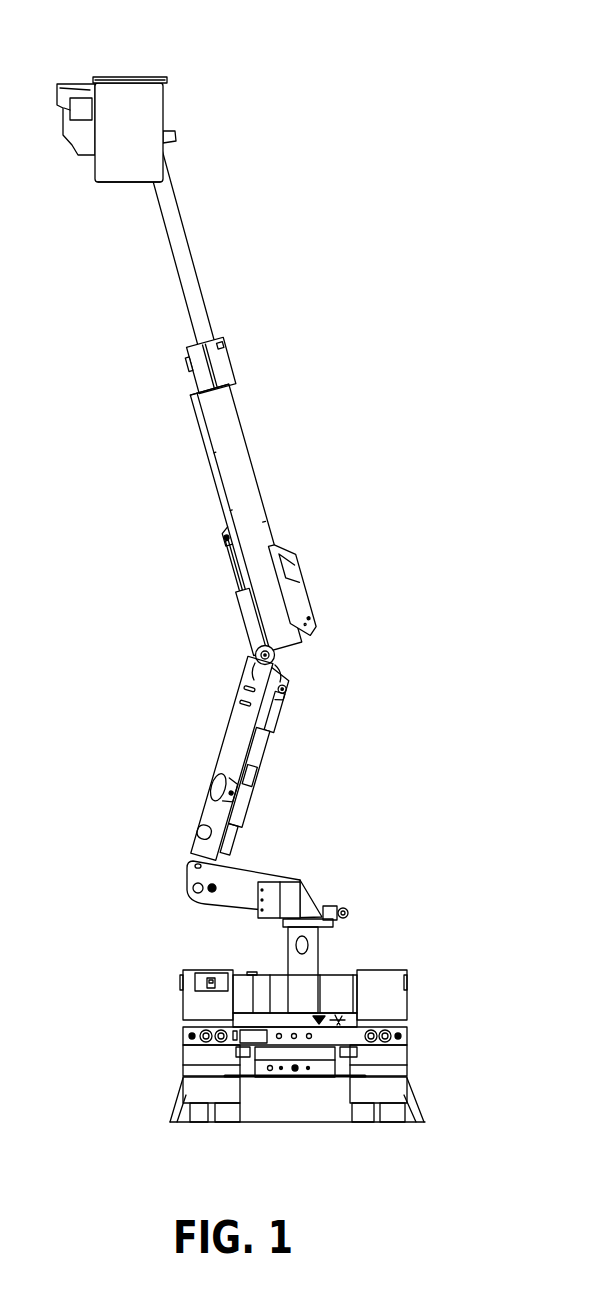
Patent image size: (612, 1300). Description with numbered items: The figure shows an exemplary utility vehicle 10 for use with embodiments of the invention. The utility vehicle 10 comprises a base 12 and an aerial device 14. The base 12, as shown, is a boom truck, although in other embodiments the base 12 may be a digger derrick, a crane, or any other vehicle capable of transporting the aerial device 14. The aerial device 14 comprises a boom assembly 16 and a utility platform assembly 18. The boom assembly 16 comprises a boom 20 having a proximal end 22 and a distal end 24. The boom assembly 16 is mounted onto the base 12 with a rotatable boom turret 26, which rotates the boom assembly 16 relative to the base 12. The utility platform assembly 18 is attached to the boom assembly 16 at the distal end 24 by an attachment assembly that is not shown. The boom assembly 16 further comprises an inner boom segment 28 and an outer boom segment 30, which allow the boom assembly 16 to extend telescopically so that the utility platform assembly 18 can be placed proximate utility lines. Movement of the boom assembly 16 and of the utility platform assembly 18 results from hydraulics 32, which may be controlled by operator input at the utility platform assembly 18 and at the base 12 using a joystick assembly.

The utility vehicle 10 is at (358, 87).
The base 12 is at (158, 1000).
The aerial device 14 is at (374, 548).
The boom assembly 16 is at (178, 510).
The utility platform assembly 18 is at (108, 44).
The boom 20 is at (266, 513).
The proximal end 22 is at (283, 813).
The distal end 24 is at (201, 200).
The rotatable boom turret 26 is at (307, 893).
The inner boom segment 28 is at (183, 288).
The outer boom segment 30 is at (201, 439).
The hydraulics 32 is at (222, 642).